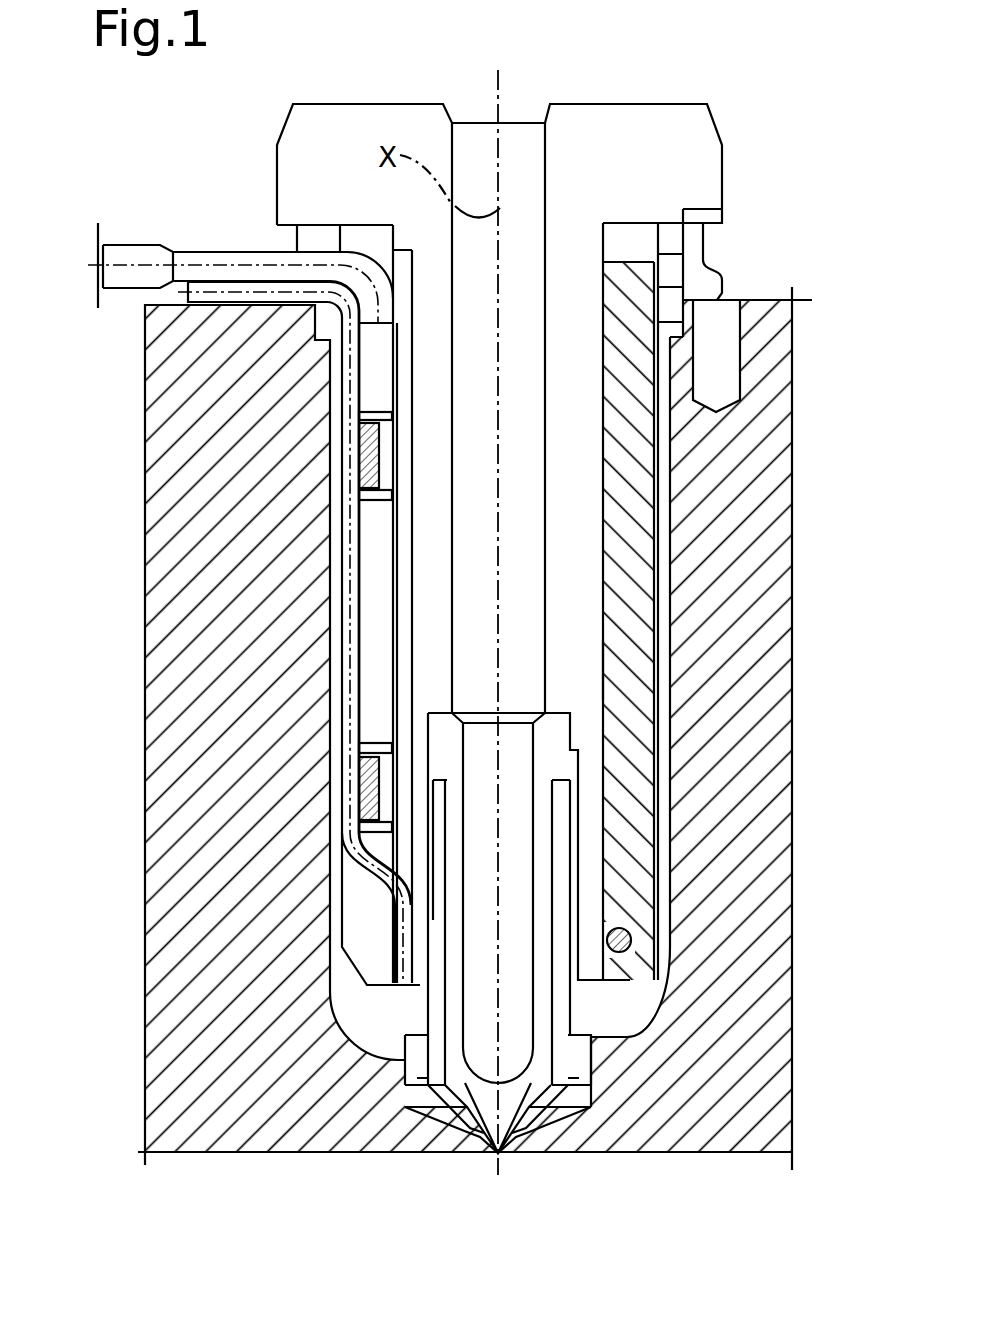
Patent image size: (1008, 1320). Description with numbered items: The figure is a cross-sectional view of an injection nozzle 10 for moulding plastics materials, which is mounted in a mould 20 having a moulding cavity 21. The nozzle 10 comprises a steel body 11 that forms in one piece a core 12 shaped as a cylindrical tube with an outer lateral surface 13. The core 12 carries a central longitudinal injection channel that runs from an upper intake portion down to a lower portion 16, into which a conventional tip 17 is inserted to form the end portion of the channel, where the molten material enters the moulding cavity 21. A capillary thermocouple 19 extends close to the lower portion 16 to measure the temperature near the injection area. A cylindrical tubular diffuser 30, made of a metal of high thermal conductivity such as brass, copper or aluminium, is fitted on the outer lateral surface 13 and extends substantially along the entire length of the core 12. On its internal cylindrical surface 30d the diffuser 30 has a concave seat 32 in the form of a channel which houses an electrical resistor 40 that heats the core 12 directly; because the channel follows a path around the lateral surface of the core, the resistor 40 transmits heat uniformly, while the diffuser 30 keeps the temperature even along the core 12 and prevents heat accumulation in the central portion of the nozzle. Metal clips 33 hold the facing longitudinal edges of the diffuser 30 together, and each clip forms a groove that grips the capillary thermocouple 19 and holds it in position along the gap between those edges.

The injection nozzle 10 is at (728, 187).
The steel body 11 is at (597, 153).
The core 12 is at (582, 338).
The outer lateral surface 13 is at (603, 502).
The lower portion 16 is at (480, 1033).
The tip 17 is at (580, 1003).
The capillary thermocouple 19 is at (240, 297).
The mould 20 is at (203, 742).
The moulding cavity 21 is at (502, 1226).
The diffuser 30 is at (377, 580).
The internal cylindrical surface 30d is at (608, 640).
The concave seat 32 is at (630, 935).
The clips 33 is at (378, 457).
The electrical resistor 40 is at (233, 253).